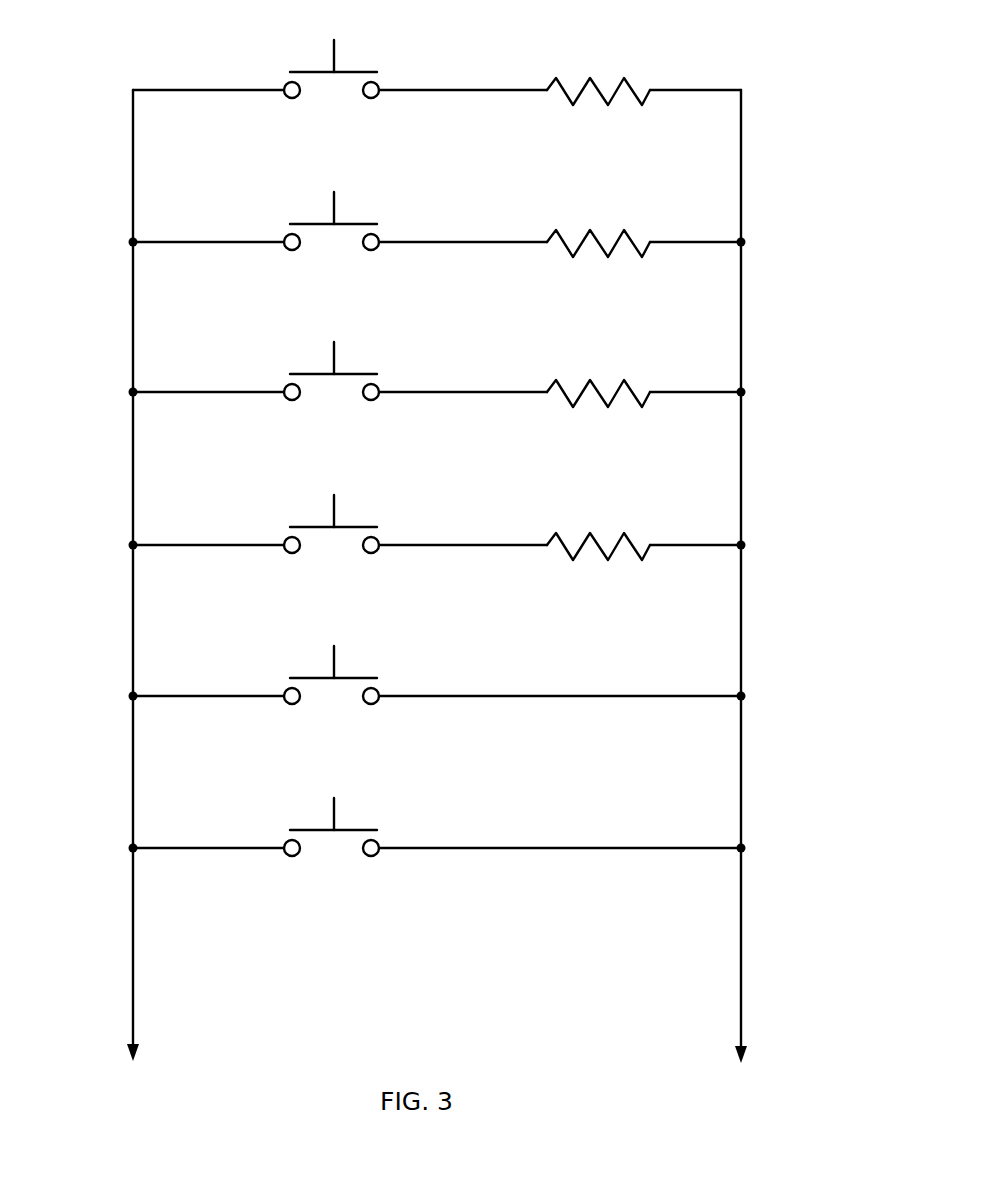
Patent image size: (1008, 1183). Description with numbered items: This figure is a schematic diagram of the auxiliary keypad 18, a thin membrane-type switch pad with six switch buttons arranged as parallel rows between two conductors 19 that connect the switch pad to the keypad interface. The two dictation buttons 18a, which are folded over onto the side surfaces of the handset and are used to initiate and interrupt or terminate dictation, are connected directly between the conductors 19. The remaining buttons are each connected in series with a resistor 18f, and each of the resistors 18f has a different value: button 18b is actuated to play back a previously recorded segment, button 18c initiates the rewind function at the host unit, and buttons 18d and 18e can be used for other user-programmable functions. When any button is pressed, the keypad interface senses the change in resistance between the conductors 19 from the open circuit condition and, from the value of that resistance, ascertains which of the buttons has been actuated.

The keypad 18 is at (840, 478).
The button 18a is at (354, 657).
The button 18b is at (349, 352).
The button 18c is at (351, 508).
The button 18d is at (354, 206).
The button 18e is at (358, 52).
The resistor 18f is at (597, 85).
The conductors 19 is at (133, 990).